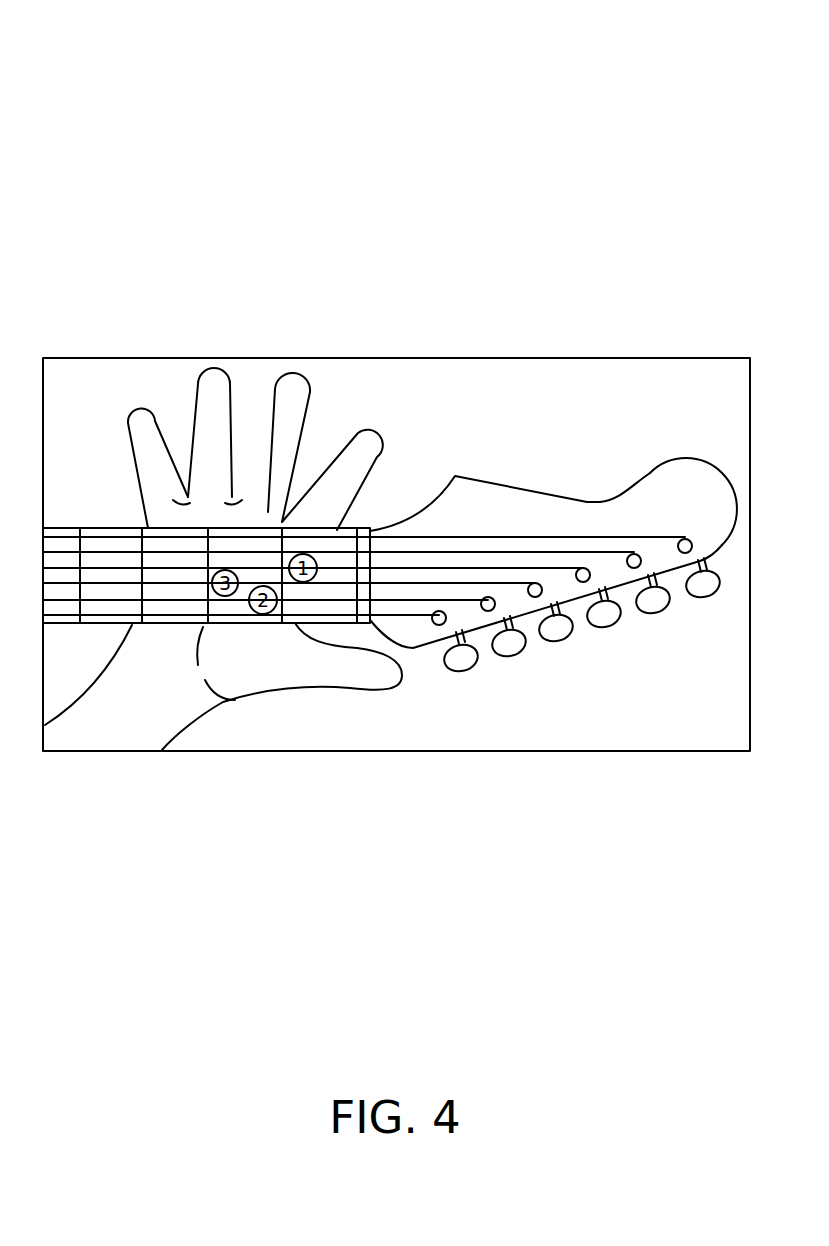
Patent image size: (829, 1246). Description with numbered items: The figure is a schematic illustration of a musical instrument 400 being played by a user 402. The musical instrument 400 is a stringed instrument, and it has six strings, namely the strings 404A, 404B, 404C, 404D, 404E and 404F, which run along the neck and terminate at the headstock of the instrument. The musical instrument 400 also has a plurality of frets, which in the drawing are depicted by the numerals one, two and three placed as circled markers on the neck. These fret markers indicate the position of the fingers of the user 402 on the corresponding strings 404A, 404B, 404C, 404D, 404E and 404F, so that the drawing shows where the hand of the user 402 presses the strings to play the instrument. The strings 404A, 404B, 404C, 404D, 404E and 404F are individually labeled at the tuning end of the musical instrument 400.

The musical instrument 400 is at (708, 65).
The user 402 is at (137, 408).
The string 404A is at (702, 598).
The string 404B is at (652, 614).
The string 404C is at (603, 628).
The string 404D is at (555, 642).
The string 404E is at (508, 657).
The string 404F is at (460, 672).